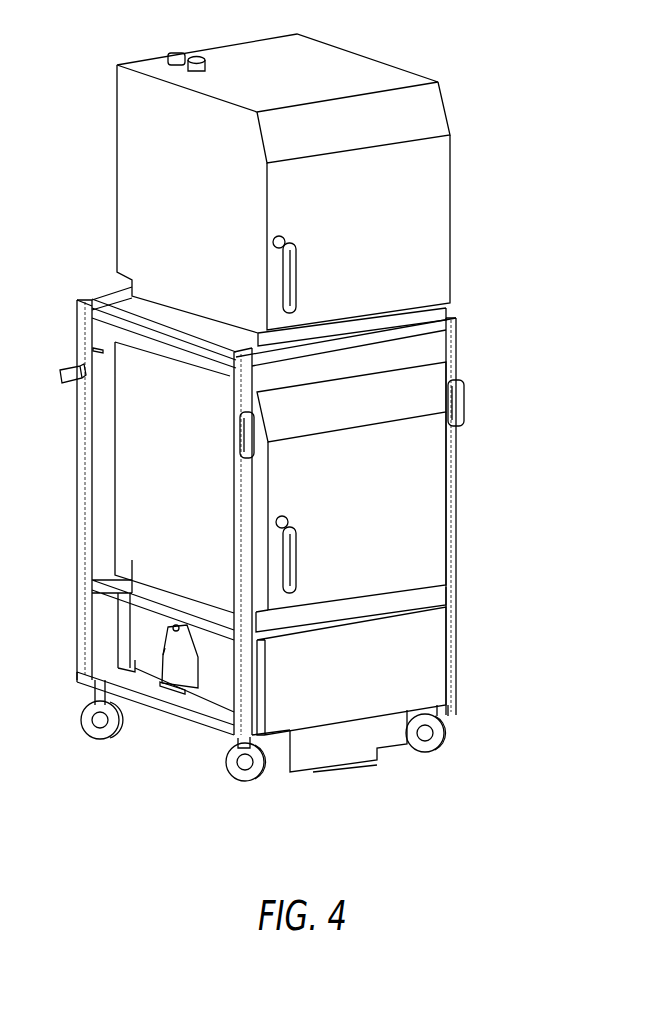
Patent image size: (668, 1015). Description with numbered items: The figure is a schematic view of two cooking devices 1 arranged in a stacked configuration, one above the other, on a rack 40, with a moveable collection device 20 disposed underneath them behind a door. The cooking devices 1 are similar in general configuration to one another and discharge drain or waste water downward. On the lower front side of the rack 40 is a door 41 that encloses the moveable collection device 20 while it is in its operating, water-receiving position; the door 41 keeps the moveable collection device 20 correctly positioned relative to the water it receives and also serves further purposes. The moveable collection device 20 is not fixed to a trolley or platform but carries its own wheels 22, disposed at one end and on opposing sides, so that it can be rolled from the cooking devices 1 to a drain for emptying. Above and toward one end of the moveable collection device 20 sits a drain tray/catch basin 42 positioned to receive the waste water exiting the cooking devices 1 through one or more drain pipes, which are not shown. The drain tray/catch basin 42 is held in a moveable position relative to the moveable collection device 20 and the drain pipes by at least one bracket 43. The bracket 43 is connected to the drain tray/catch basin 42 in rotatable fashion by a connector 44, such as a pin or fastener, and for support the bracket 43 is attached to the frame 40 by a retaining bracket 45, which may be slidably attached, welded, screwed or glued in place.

The cooking device 1 is at (434, 207).
The moveable collection device 20 is at (360, 738).
The wheels 22 is at (185, 733).
The rack 40 is at (77, 330).
The door 41 is at (430, 657).
The drain tray/catch basin 42 is at (143, 617).
The bracket 43 is at (178, 665).
The connector 44 is at (163, 642).
The retaining bracket 45 is at (205, 733).